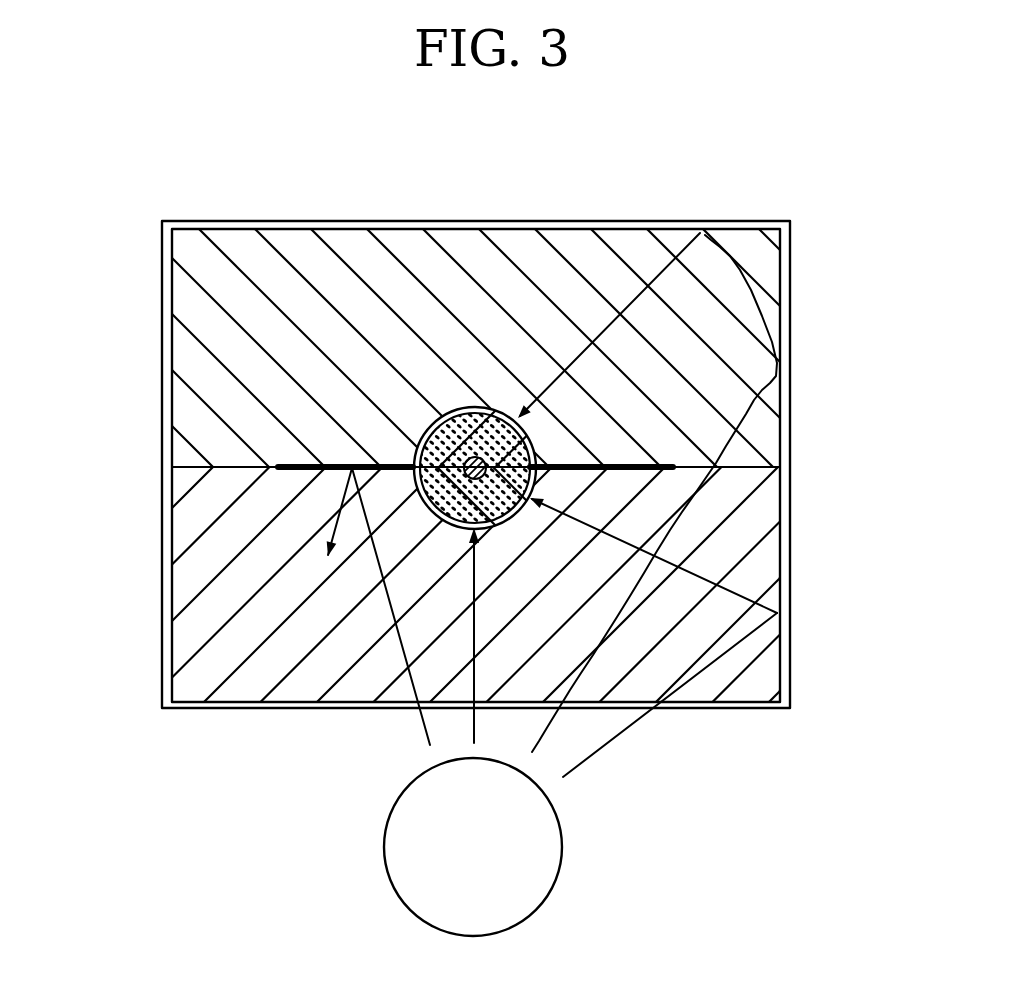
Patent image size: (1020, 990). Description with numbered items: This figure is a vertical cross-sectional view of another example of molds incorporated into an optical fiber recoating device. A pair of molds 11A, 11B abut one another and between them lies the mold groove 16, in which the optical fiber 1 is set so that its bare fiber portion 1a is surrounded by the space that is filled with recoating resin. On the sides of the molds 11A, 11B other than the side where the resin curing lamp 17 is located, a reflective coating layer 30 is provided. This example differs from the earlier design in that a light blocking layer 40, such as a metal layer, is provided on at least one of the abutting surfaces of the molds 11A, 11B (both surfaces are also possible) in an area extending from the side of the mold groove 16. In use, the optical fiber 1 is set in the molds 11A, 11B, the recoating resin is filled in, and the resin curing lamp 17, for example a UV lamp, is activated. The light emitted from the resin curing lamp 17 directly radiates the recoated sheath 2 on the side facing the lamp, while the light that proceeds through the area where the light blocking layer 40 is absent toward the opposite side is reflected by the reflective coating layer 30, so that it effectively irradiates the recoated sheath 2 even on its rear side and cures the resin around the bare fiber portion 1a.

The optical fiber 1 is at (327, 604).
The bare fiber portion 1a is at (470, 321).
The recoated sheath 2 is at (394, 343).
The mold 11A is at (406, 495).
The mold 11B is at (407, 495).
The mold groove 16 is at (411, 475).
The resin curing lamp 17 is at (529, 584).
The reflective coating layer 30 is at (452, 432).
The light blocking layer 40 is at (452, 521).